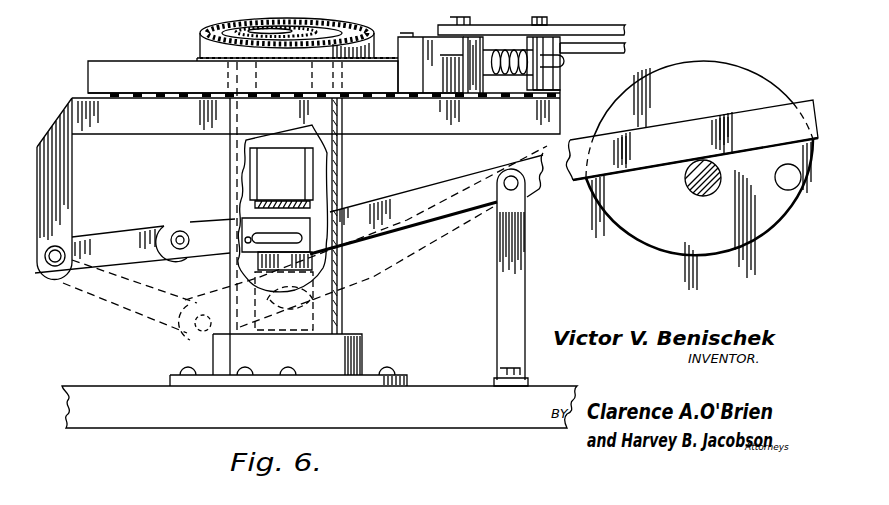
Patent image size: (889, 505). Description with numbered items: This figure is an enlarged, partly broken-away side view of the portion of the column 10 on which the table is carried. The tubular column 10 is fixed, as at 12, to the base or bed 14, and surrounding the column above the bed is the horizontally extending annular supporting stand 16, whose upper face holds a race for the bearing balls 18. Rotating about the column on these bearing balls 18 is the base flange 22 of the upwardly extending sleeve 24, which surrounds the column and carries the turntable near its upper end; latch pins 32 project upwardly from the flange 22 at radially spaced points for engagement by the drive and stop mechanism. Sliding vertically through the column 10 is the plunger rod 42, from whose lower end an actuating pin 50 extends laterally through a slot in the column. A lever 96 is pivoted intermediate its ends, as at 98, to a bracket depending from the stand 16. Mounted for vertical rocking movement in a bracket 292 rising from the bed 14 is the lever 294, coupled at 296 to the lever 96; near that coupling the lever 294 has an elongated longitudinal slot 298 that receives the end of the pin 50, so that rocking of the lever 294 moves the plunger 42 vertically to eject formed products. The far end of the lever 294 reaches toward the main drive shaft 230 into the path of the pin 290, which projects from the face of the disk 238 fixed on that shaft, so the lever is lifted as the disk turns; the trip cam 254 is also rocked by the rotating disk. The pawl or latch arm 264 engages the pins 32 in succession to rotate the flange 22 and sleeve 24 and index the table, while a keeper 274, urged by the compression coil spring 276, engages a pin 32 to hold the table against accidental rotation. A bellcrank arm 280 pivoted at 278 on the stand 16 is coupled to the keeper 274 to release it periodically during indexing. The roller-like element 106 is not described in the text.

The column 10 is at (341, 307).
The fixing of column to bed 12 is at (346, 349).
The base or bed 14 is at (437, 392).
The annular supporting stand 16 is at (180, 125).
The bearing balls 18 is at (170, 97).
The base flange 22 is at (158, 67).
The rotatable sleeve 24 is at (362, 33).
The latch pins 32 is at (403, 33).
The plunger rod 42 is at (300, 174).
The actuating pin 50 is at (276, 232).
The lever 96 is at (121, 240).
The pivot of lever 98 is at (60, 186).
The roller 106 is at (287, 29).
The main drive shaft 230 is at (690, 191).
The disk 238 is at (621, 251).
The trip cam 254 is at (130, 0).
The pawl or latch arm 264 is at (581, 49).
The keeper 274 is at (452, 47).
The compression coil spring 276 is at (500, 80).
The pivot of bellcrank arm 278 is at (538, 17).
The bellcrank arm 280 is at (508, 26).
The pin 290 is at (786, 191).
The bracket 292 is at (507, 264).
The lever 294 is at (418, 192).
The coupling 296 is at (183, 237).
The elongated longitudinal slot 298 is at (248, 243).